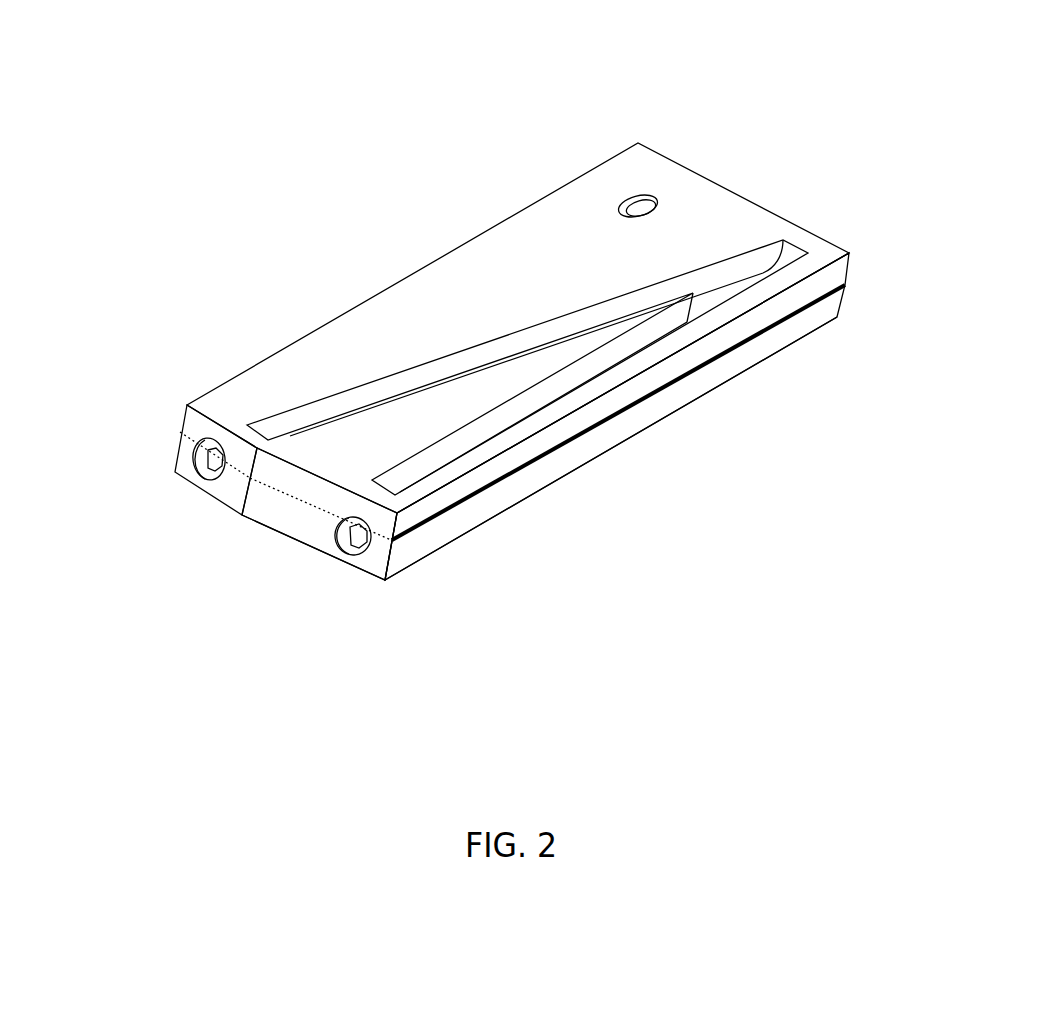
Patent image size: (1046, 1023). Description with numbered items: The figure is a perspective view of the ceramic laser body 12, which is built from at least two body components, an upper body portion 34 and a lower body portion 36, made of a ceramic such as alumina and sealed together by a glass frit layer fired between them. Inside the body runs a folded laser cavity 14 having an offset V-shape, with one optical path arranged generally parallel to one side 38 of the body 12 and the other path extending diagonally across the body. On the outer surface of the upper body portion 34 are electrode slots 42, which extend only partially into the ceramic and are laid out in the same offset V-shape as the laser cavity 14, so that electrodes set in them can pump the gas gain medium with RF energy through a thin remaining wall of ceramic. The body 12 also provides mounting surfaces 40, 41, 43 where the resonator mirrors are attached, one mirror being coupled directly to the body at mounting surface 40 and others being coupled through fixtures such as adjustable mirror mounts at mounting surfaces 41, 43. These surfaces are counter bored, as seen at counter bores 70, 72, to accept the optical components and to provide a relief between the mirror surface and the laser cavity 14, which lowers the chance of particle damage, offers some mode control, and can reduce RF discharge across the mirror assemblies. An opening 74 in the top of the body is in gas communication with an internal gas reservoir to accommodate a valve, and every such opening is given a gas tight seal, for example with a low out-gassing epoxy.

The laser body 12 is at (320, 103).
The laser cavity 14 is at (361, 541).
The upper body portion 34 is at (850, 265).
The lower body portion 36 is at (842, 303).
The side of the body 38 is at (640, 425).
The mounting surface 40 is at (285, 513).
The mounting surface 41 is at (831, 232).
The electrode slots 42 is at (413, 380).
The mounting surface 43 is at (193, 422).
The counter bore 70 is at (340, 547).
The counter bore 72 is at (192, 462).
The opening 74 is at (640, 194).